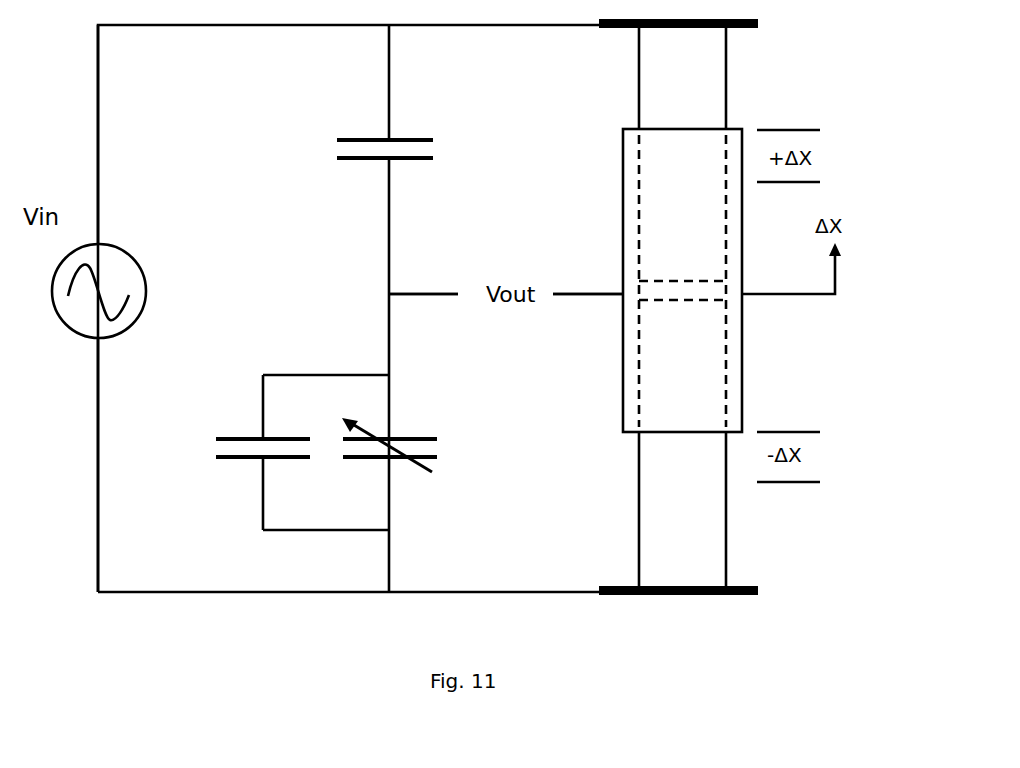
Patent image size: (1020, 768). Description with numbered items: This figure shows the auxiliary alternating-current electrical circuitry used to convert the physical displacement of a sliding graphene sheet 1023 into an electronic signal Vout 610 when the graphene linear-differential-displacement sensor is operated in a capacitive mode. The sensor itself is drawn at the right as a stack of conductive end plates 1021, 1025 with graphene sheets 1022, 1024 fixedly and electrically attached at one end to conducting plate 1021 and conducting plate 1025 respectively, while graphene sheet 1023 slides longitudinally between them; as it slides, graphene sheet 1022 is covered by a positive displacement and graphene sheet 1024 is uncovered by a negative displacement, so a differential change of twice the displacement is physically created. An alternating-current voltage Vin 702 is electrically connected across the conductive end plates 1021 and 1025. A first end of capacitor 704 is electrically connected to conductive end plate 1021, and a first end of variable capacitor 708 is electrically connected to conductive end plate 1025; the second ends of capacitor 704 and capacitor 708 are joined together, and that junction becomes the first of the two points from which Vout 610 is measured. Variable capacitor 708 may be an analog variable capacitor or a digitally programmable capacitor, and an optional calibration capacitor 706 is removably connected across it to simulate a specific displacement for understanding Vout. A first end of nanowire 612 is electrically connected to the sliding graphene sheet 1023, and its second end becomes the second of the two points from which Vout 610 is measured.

The alternating current (AC) voltage Vin 702 is at (132, 257).
The capacitor 704 is at (360, 135).
The calibration capacitor 706 is at (217, 438).
The variable capacitor 708 is at (437, 455).
The electronic signal Vout 610 is at (482, 293).
The nanowire 612 is at (580, 297).
The conductive end plate 1021 is at (757, 26).
The graphene sheet 1022 is at (726, 90).
The graphene sheet 1023 is at (742, 345).
The graphene sheet 1024 is at (726, 487).
The conductive end plate 1025 is at (757, 588).